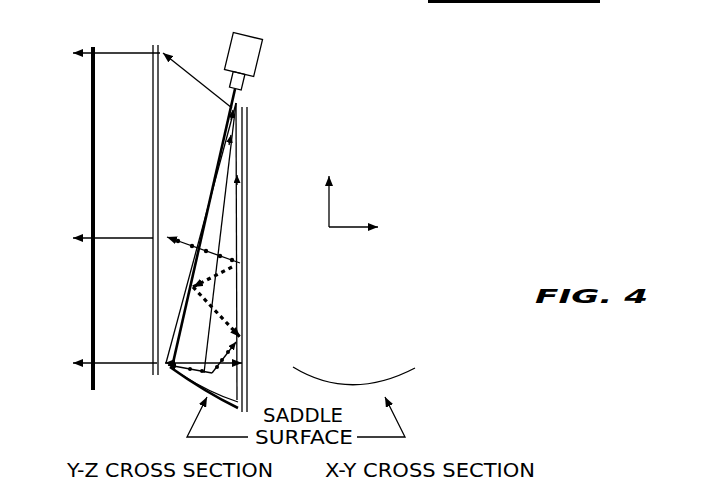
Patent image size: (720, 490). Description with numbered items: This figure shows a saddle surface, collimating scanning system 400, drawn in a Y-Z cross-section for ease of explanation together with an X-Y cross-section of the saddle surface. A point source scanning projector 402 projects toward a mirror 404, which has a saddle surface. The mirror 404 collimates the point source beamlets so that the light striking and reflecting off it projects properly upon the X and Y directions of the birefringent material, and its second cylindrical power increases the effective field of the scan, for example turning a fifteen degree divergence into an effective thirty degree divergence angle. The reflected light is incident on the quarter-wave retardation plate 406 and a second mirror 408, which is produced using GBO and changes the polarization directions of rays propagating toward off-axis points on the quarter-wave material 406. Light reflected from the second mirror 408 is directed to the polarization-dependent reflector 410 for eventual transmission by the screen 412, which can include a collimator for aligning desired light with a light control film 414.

The saddle surface, collimating scanning system 400 is at (349, 117).
The point source scanning projector 402 is at (260, 58).
The mirror 404 is at (185, 375).
The quarter-wave retardation plate 406 is at (238, 104).
The second mirror 408 is at (252, 133).
The polarization-dependent reflector 410 is at (215, 162).
The screen 412 is at (159, 45).
The light control film 414 is at (93, 46).